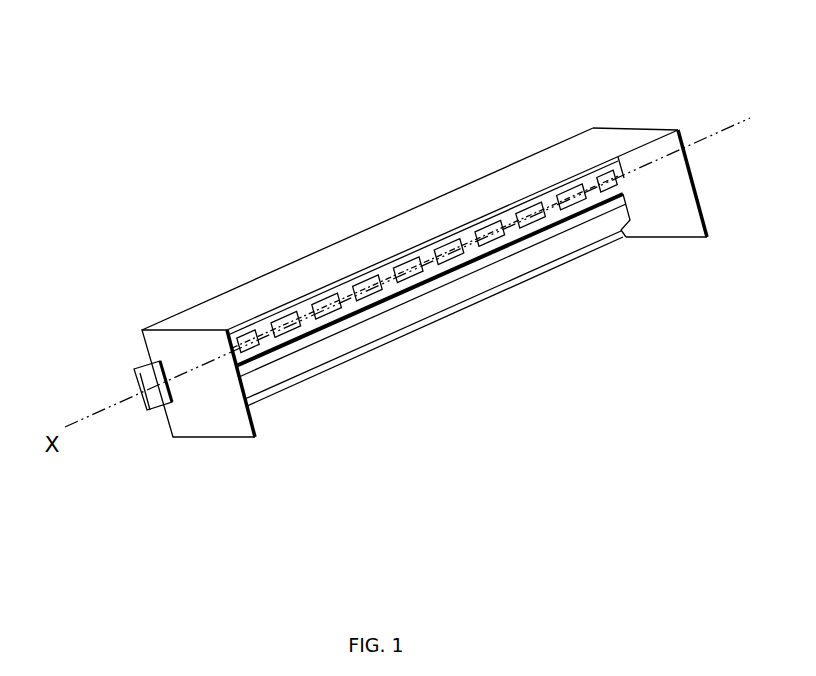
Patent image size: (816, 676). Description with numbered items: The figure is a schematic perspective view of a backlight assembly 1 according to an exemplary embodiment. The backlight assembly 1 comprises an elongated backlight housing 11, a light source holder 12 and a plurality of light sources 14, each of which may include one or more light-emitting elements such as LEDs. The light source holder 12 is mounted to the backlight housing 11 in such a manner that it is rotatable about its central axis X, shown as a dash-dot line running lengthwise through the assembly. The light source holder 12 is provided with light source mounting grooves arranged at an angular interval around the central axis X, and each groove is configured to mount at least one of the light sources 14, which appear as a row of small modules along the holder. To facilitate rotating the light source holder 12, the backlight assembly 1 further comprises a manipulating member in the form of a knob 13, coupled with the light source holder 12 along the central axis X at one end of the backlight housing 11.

The backlight assembly 1 is at (409, 124).
The backlight housing 11 is at (199, 416).
The light source holder 12 is at (607, 226).
The knob 13 is at (153, 376).
The light sources 14 is at (332, 326).